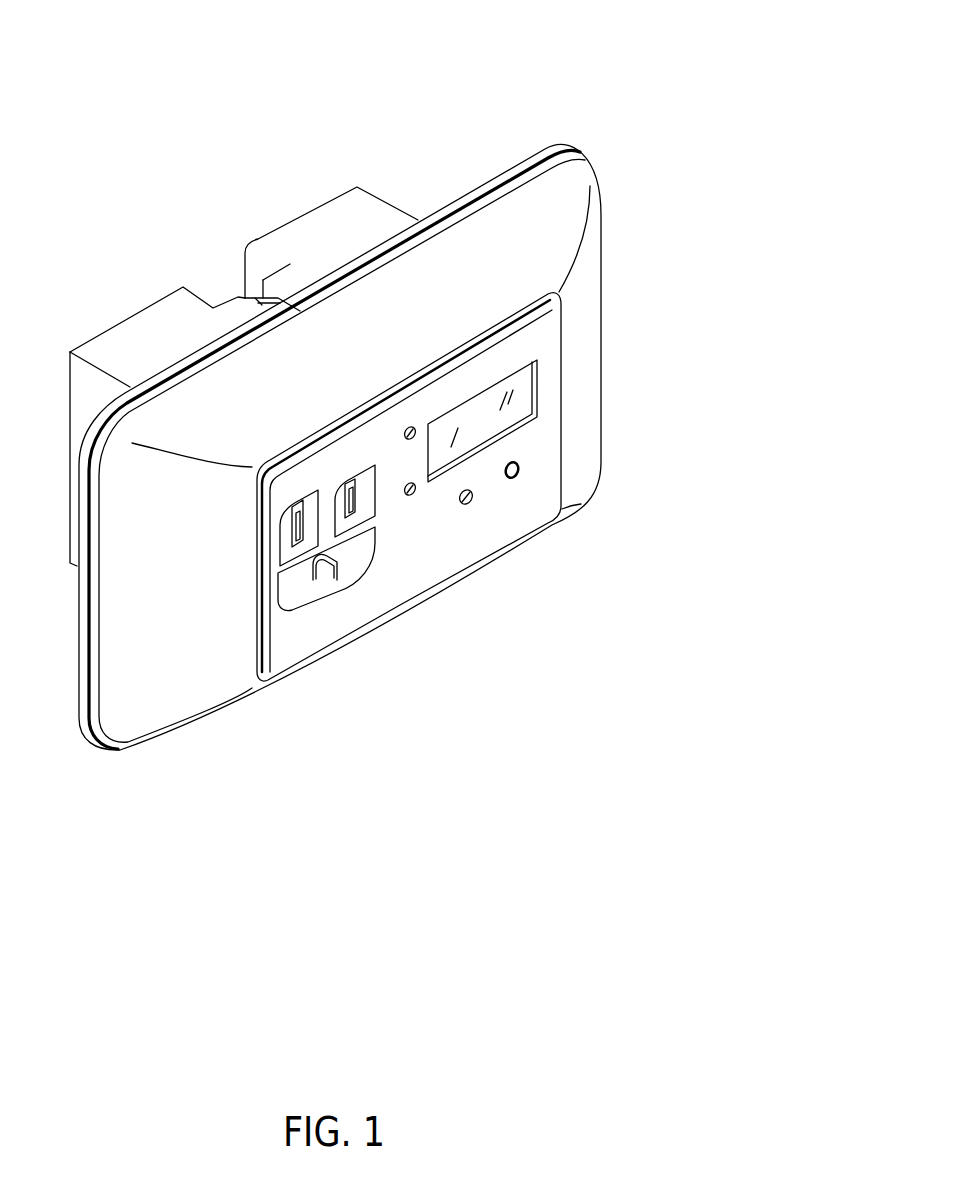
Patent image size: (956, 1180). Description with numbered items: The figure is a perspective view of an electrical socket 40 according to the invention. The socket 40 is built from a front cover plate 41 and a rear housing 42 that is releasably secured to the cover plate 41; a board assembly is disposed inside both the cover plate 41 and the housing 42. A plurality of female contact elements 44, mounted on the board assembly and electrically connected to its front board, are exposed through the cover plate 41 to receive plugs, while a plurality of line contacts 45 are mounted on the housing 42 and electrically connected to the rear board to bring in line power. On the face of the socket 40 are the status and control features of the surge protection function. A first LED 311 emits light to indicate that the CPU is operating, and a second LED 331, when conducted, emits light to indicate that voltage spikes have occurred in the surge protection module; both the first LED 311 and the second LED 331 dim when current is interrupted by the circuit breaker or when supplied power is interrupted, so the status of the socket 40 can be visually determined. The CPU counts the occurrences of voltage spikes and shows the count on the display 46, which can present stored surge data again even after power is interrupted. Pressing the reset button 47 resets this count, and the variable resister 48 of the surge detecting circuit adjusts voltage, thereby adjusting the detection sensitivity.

The electrical socket 40 is at (640, 42).
The front cover plate 41 is at (587, 282).
The rear housing 42 is at (362, 218).
The female contact elements 44 is at (333, 577).
The line contacts 45 is at (265, 308).
The display 46 is at (525, 413).
The reset button 47 is at (517, 470).
The variable resister 48 is at (472, 497).
The first LED 311 is at (410, 427).
The second LED 331 is at (417, 490).